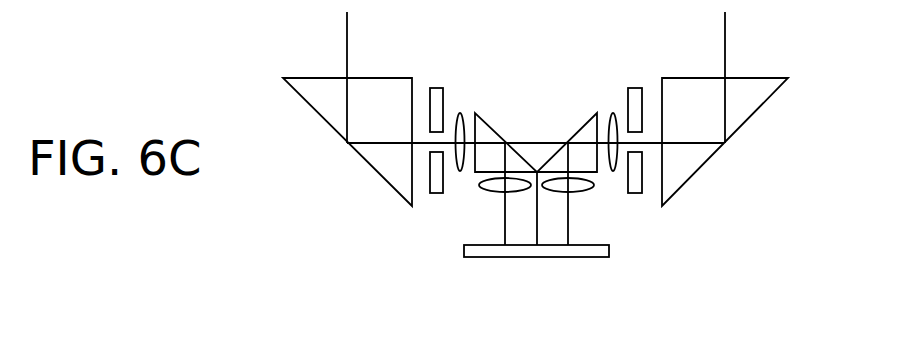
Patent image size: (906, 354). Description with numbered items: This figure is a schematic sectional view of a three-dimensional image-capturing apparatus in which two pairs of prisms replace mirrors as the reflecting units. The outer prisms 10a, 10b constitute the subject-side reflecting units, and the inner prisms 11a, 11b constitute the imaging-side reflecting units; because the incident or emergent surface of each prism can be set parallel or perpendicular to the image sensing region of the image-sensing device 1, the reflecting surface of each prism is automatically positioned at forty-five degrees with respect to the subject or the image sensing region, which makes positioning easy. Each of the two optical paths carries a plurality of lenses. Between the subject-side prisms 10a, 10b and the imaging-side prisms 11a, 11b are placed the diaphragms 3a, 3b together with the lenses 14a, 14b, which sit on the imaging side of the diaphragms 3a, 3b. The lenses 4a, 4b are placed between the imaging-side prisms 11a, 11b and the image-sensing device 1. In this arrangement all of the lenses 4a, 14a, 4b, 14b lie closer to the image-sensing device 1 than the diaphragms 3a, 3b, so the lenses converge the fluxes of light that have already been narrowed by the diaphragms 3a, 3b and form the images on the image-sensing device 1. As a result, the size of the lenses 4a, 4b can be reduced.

The image-sensing device 1 is at (611, 251).
The diaphragm 3a is at (439, 88).
The diaphragm 3b is at (633, 88).
The lens 4a is at (459, 174).
The lens 4b is at (578, 192).
The prism 10a is at (338, 114).
The prism 10b is at (739, 114).
The prism 11a is at (487, 130).
The prism 11b is at (584, 130).
The lens 14a is at (495, 192).
The lens 14b is at (613, 174).